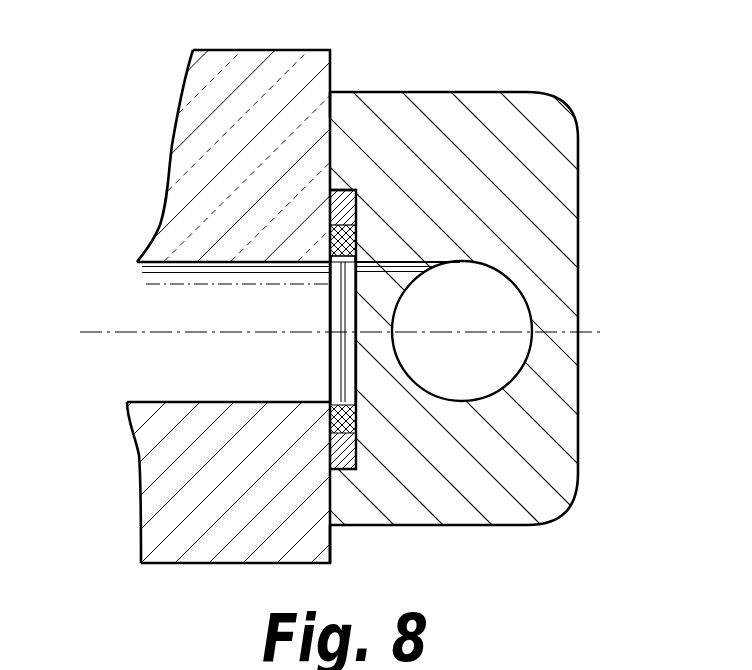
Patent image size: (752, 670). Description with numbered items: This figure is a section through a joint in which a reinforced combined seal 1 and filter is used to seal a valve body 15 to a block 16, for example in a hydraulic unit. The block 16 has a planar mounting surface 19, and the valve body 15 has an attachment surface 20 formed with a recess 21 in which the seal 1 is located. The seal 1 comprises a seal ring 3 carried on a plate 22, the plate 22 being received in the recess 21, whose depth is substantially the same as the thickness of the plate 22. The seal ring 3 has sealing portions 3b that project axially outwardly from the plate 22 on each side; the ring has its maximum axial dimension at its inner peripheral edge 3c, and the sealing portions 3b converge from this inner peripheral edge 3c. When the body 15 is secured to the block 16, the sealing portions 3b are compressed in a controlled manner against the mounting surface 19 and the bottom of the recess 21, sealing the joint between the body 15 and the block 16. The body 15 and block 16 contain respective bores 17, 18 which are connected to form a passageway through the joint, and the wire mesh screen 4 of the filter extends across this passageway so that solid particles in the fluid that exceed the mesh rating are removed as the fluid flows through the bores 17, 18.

The combined seal 1 is at (358, 418).
The seal ring 3 is at (330, 425).
The sealing portions 3b is at (330, 247).
The inner peripheral edge 3c is at (330, 262).
The wire mesh screen 4 is at (338, 391).
The valve body 15 is at (550, 468).
The block 16 is at (202, 492).
The bore 17 is at (500, 315).
The bore 18 is at (142, 302).
The planar mounting surface 19 is at (328, 553).
The attachment surface 20 is at (330, 118).
The recess 21 is at (335, 190).
The plate 22 is at (328, 203).